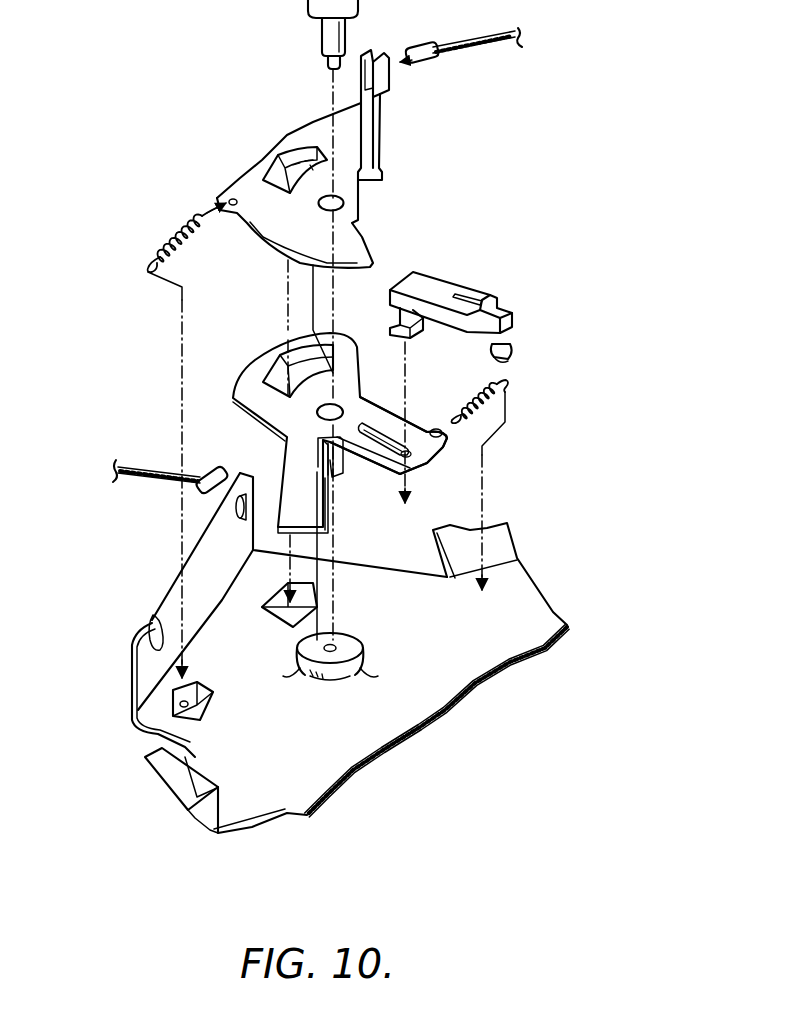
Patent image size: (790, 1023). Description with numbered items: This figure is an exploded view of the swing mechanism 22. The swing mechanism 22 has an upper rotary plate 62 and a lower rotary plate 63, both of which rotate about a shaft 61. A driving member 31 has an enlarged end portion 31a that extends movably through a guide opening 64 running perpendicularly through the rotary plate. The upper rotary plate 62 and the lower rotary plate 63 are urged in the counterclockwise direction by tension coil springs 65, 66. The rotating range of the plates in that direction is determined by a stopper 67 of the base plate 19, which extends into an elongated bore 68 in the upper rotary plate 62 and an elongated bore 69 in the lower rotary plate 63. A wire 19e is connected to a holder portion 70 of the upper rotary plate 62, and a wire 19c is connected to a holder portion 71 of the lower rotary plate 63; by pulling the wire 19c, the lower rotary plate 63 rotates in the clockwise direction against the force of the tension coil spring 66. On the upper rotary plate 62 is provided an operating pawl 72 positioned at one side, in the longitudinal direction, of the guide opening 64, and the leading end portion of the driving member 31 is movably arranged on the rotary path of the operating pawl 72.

The base plate 19 is at (527, 598).
The wire 19c is at (128, 478).
The wire 19e is at (500, 32).
The swing mechanism 22 is at (545, 350).
The driving member 31 is at (505, 310).
The enlarged end portion 31a is at (392, 327).
The shaft 61 is at (328, 35).
The upper rotary plate 62 is at (350, 184).
The lower rotary plate 63 is at (356, 401).
The guide opening 64 is at (418, 470).
The tension coil spring 65 is at (160, 240).
The tension coil spring 66 is at (508, 422).
The stopper 67 is at (302, 640).
The elongated bore 68 is at (268, 178).
The elongated bore 69 is at (272, 372).
The holder portion 70 is at (388, 82).
The holder portion 71 is at (330, 478).
The operating pawl 72 is at (375, 248).